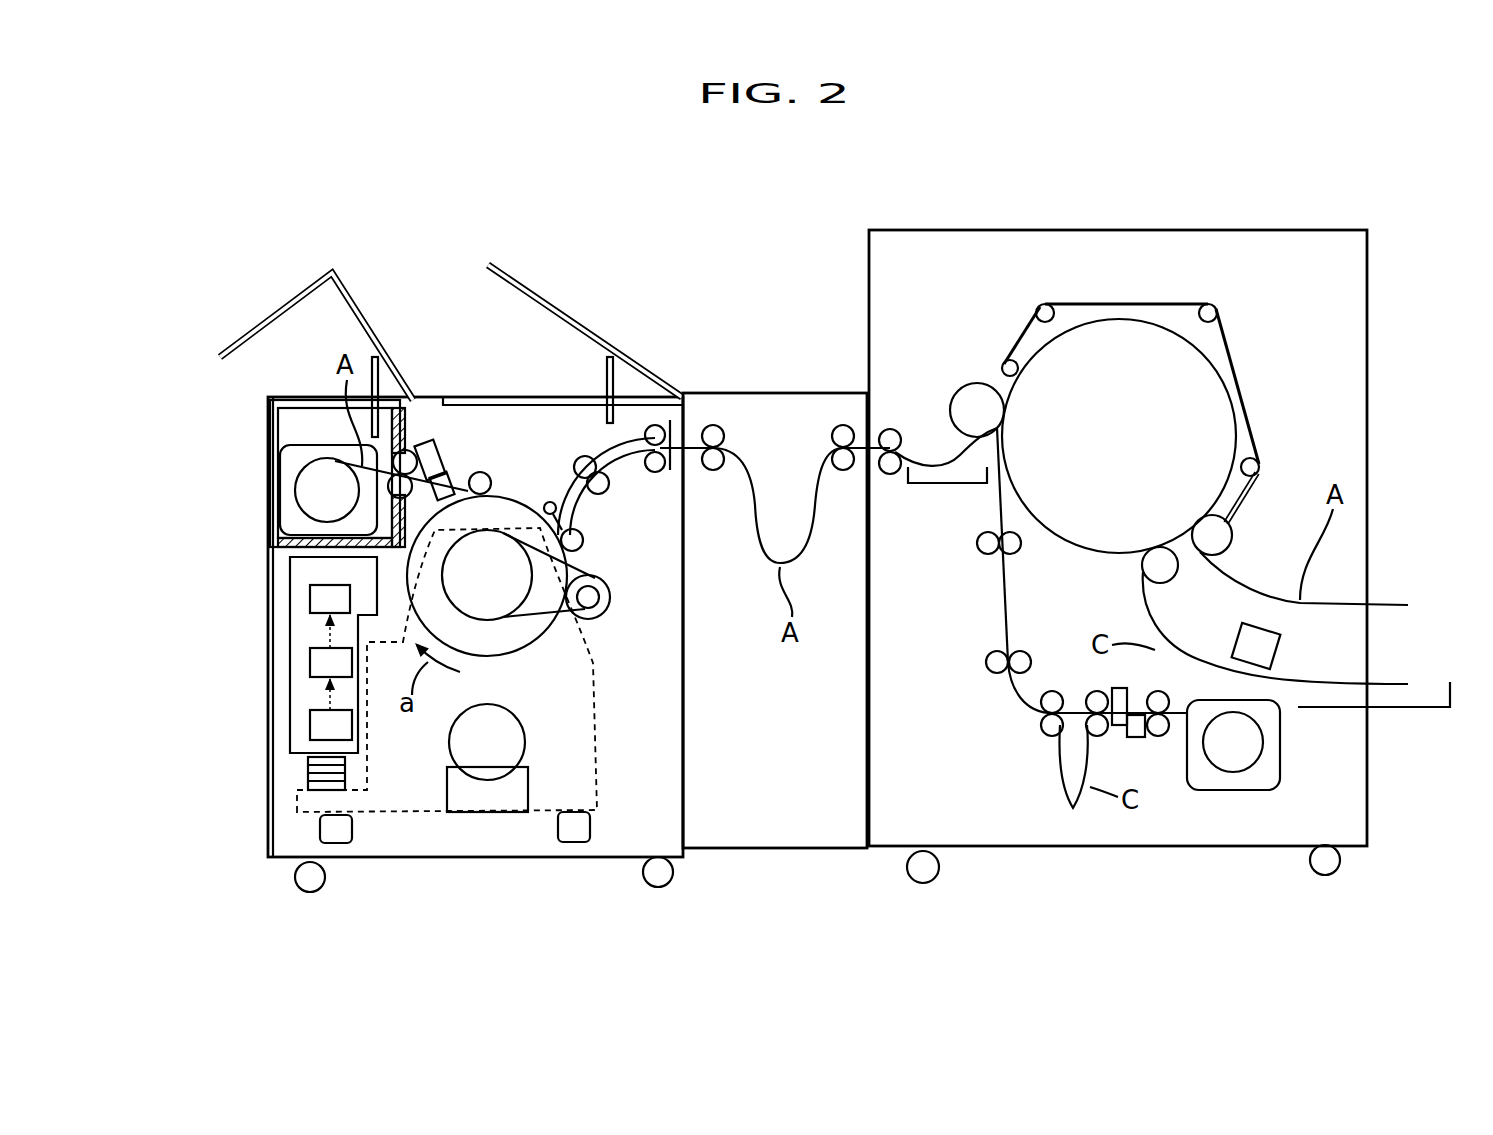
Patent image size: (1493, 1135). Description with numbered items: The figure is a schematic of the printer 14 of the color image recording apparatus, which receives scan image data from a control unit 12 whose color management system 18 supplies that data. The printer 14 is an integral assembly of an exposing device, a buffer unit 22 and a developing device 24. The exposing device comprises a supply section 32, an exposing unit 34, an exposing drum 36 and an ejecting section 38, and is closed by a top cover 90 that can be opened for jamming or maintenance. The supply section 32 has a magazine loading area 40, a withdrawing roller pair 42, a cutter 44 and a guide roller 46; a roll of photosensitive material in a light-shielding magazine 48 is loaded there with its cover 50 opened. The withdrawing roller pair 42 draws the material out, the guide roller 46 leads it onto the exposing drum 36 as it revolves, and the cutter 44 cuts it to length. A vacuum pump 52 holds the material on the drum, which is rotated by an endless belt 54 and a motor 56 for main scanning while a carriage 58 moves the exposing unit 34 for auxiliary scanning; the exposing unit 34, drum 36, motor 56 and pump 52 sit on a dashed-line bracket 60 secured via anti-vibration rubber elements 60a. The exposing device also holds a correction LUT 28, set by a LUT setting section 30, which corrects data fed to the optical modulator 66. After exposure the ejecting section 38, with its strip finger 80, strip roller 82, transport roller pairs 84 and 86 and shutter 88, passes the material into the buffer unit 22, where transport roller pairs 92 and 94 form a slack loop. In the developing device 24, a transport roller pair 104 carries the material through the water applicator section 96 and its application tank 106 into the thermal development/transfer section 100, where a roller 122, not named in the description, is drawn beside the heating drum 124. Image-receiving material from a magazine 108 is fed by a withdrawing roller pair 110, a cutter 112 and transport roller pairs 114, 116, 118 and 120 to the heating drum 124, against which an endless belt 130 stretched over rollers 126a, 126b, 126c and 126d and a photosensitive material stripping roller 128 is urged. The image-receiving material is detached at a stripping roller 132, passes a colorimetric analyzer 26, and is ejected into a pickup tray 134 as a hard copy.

The control unit 12 is at (516, 858).
The printer 14 is at (795, 286).
The color management system 18 is at (306, 663).
The buffer unit 22 is at (790, 752).
The developing device 24 is at (1370, 458).
The colorimetric analyzer 26 is at (312, 727).
The correction LUT 28 is at (310, 653).
The LUT setting section 30 is at (312, 730).
The supply section 32 is at (448, 428).
The exposing unit 34 is at (285, 570).
The exposing drum 36 is at (527, 632).
The ejecting section 38 is at (648, 556).
The magazine loading area 40 is at (317, 428).
The withdrawing roller pair 42 is at (404, 450).
The cutter 44 is at (437, 465).
The guide roller 46 is at (485, 478).
The magazine 48 is at (290, 472).
The cover 50 is at (360, 312).
The vacuum pump 52 is at (466, 735).
The endless belt 54 is at (515, 625).
The motor 56 is at (600, 620).
The carriage 58 is at (307, 777).
The bracket 60 is at (597, 727).
The anti-vibration rubber elements 60a is at (337, 838).
The optical modulator 66 is at (310, 600).
The strip finger 80 is at (552, 502).
The strip roller 82 is at (610, 598).
The transport roller pair 84 is at (600, 490).
The transport roller pair 86 is at (653, 428).
The shutter 88 is at (656, 472).
The top cover 90 is at (563, 311).
The transport roller pair 92 is at (713, 470).
The transport roller pair 94 is at (843, 470).
The water applicator section 96 is at (933, 380).
The thermal development/transfer section 100 is at (1260, 342).
The transport roller pair 104 is at (890, 430).
The application tank 106 is at (915, 485).
The image-receiving material magazine 108 is at (1280, 757).
The withdrawing roller pair 110 is at (1162, 730).
The cutter 112 is at (1140, 692).
The transport roller pair 114 is at (1097, 698).
The transport roller pair 116 is at (1042, 730).
The transport roller pair 118 is at (993, 665).
The transport roller pair 120 is at (985, 550).
The pressure roller 122 is at (975, 400).
The heating drum 124 is at (1097, 528).
The roller 126a is at (1008, 360).
The roller 126b is at (1045, 304).
The roller 126c is at (1213, 305).
The roller 126d is at (1256, 460).
The photosensitive material stripping roller 128 is at (1212, 538).
The endless belt 130 is at (1238, 373).
The image-receiving material stripping roller 132 is at (1165, 568).
The pickup tray 134 is at (1427, 710).